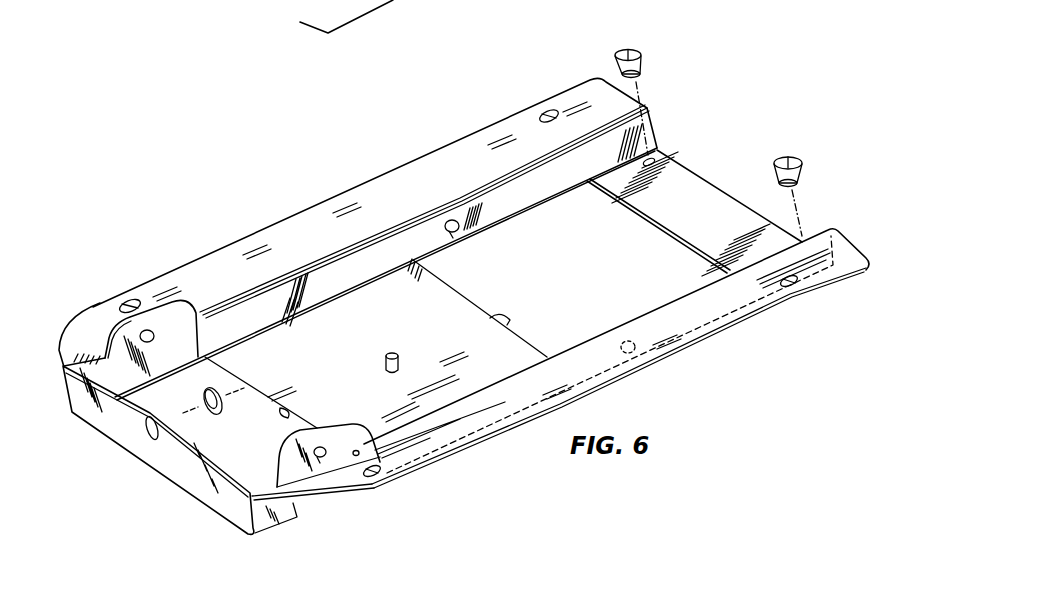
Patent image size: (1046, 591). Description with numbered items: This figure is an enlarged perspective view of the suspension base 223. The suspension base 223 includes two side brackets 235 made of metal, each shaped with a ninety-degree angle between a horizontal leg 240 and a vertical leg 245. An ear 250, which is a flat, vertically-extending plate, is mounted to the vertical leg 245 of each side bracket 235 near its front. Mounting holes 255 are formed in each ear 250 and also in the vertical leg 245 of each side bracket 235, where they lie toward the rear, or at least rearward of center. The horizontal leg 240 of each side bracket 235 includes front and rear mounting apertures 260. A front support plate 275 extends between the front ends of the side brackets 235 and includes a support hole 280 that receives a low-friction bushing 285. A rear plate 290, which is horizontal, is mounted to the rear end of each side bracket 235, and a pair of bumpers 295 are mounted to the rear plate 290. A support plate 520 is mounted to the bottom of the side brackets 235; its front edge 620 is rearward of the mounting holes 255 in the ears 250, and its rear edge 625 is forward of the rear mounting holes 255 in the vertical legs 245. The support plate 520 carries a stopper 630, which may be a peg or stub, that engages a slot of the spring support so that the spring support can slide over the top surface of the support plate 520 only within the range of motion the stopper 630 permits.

The suspension base 223 is at (236, 180).
The side bracket 235 is at (413, 239).
The horizontal leg 240 is at (462, 157).
The vertical leg 245 is at (345, 272).
The ear 250 is at (170, 322).
The mounting hole 255 is at (143, 330).
The mounting aperture 260 is at (127, 301).
The front support plate 275 is at (123, 423).
The support hole 280 is at (147, 439).
The low-friction bushing 285 is at (217, 413).
The rear plate 290 is at (700, 200).
The bumper 295 is at (634, 48).
The support plate 520 is at (376, 343).
The front edge 620 is at (285, 412).
The rear edge 625 is at (500, 318).
The stopper 630 is at (391, 352).